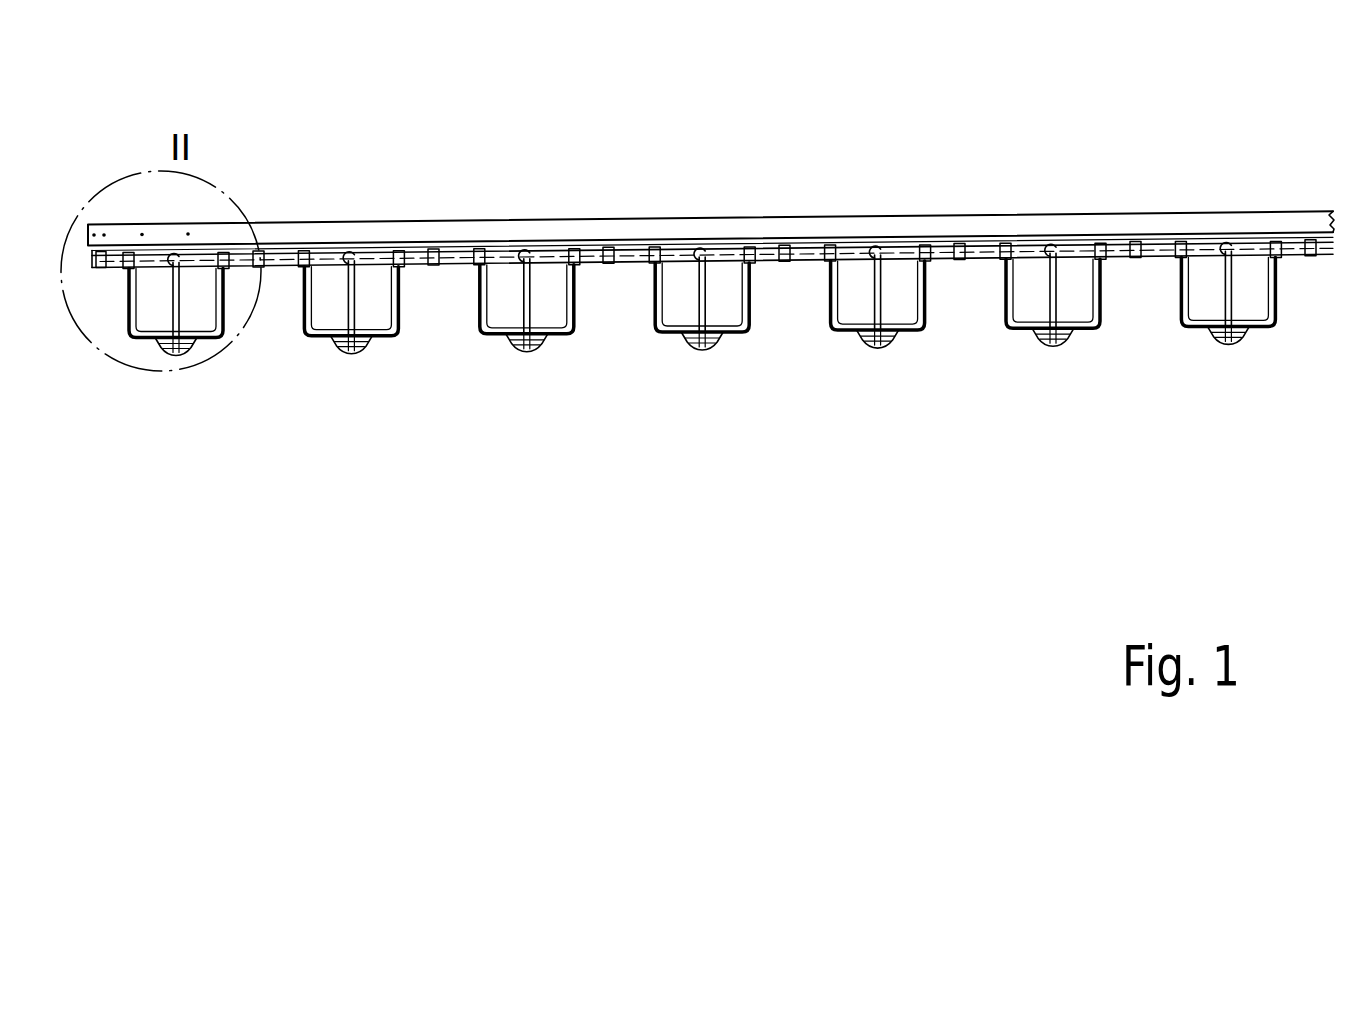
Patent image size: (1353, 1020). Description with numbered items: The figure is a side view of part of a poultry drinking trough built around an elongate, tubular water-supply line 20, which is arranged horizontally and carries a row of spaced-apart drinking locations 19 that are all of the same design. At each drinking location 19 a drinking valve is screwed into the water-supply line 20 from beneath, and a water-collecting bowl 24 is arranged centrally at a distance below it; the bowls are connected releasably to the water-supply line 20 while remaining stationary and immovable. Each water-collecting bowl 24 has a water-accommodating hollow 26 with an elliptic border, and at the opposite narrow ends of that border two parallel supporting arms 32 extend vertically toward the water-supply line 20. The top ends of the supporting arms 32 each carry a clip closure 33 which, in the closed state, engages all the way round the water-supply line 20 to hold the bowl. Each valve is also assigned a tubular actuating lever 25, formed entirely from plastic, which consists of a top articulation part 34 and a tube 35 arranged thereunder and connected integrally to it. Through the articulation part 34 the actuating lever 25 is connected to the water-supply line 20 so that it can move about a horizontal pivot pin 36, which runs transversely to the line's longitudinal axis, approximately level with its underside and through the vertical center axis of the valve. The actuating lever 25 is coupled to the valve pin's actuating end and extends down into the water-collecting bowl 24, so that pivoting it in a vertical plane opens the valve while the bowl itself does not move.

The drinking location 19 is at (729, 312).
The water-supply line 20 is at (792, 228).
The water-collecting bowl 24 is at (1237, 340).
The actuating lever 25 is at (1253, 209).
The tube 35 is at (1232, 290).
The water-accommodating hollow 26 is at (1060, 342).
The supporting arm 32 is at (312, 292).
The clip closure 33 is at (309, 295).
The articulation part 34 is at (528, 264).
The pivot pin 36 is at (1053, 258).